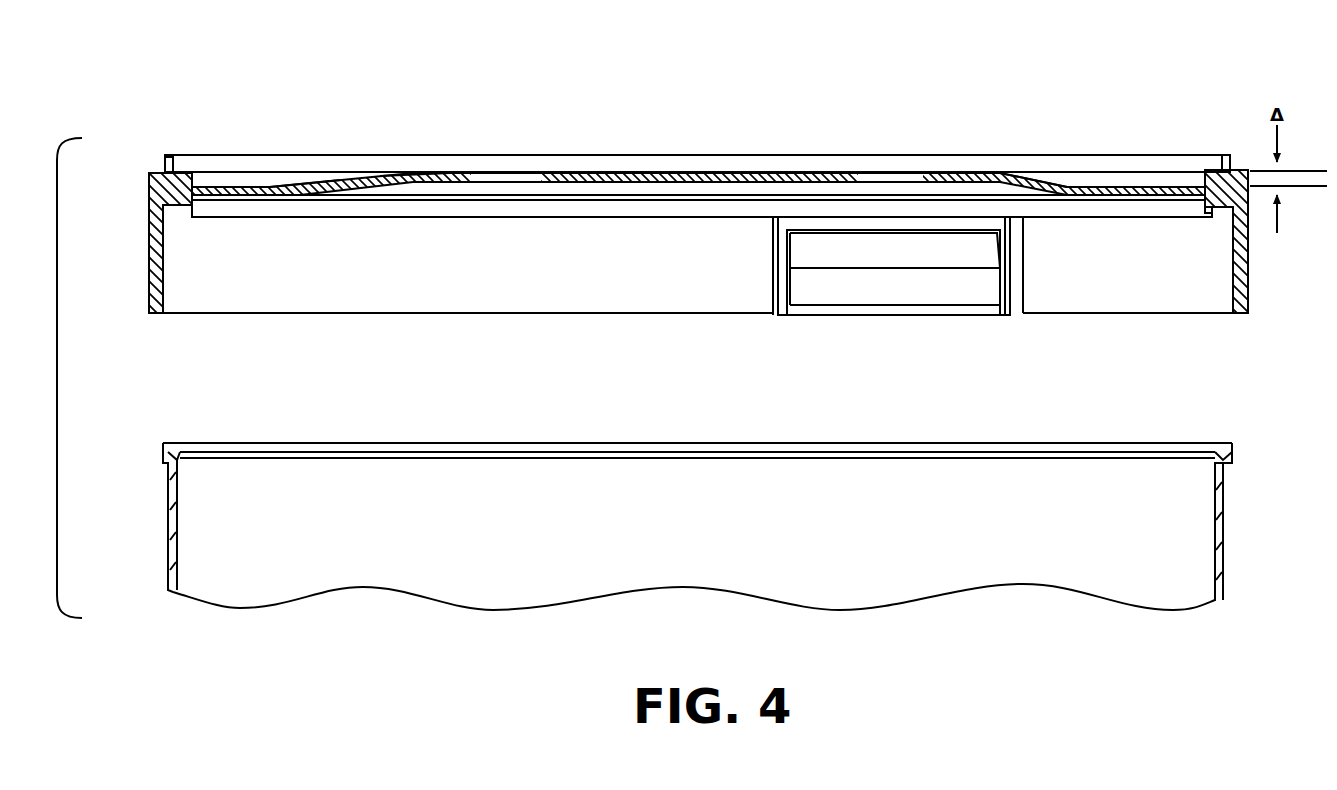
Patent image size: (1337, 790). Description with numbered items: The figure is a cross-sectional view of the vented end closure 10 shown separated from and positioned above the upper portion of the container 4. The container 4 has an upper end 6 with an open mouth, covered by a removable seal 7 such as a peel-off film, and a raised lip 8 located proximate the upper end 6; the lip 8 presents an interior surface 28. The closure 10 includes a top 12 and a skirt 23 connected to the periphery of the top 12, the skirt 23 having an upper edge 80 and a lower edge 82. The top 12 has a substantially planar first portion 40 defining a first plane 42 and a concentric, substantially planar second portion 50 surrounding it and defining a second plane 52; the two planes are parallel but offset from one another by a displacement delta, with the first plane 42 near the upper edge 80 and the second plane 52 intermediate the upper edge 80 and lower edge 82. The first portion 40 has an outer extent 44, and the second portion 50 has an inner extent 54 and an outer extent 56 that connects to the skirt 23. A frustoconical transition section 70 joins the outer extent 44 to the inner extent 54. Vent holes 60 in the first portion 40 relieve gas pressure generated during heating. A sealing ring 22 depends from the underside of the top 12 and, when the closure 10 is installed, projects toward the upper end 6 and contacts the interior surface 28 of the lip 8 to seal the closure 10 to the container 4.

The vented end closure 10 is at (126, 136).
The upper edge 80 is at (170, 167).
The outer extent 56 is at (208, 188).
The inner extent 54 is at (285, 187).
The outer extent 44 is at (417, 172).
The vent hole 60 is at (510, 172).
The first portion 40 is at (705, 172).
The top 12 is at (798, 172).
The transition section 70 is at (1040, 178).
The second portion 50 is at (1153, 188).
The first plane 42 is at (1313, 170).
The second plane 52 is at (1313, 187).
The skirt 23 is at (148, 232).
The lower edge 82 is at (153, 317).
The sealing ring 22 is at (163, 270).
The interior surface 28 is at (190, 448).
The removable seal 7 is at (572, 443).
The upper end 6 is at (1180, 443).
The raised lip 8 is at (1237, 450).
The container 4 is at (168, 560).